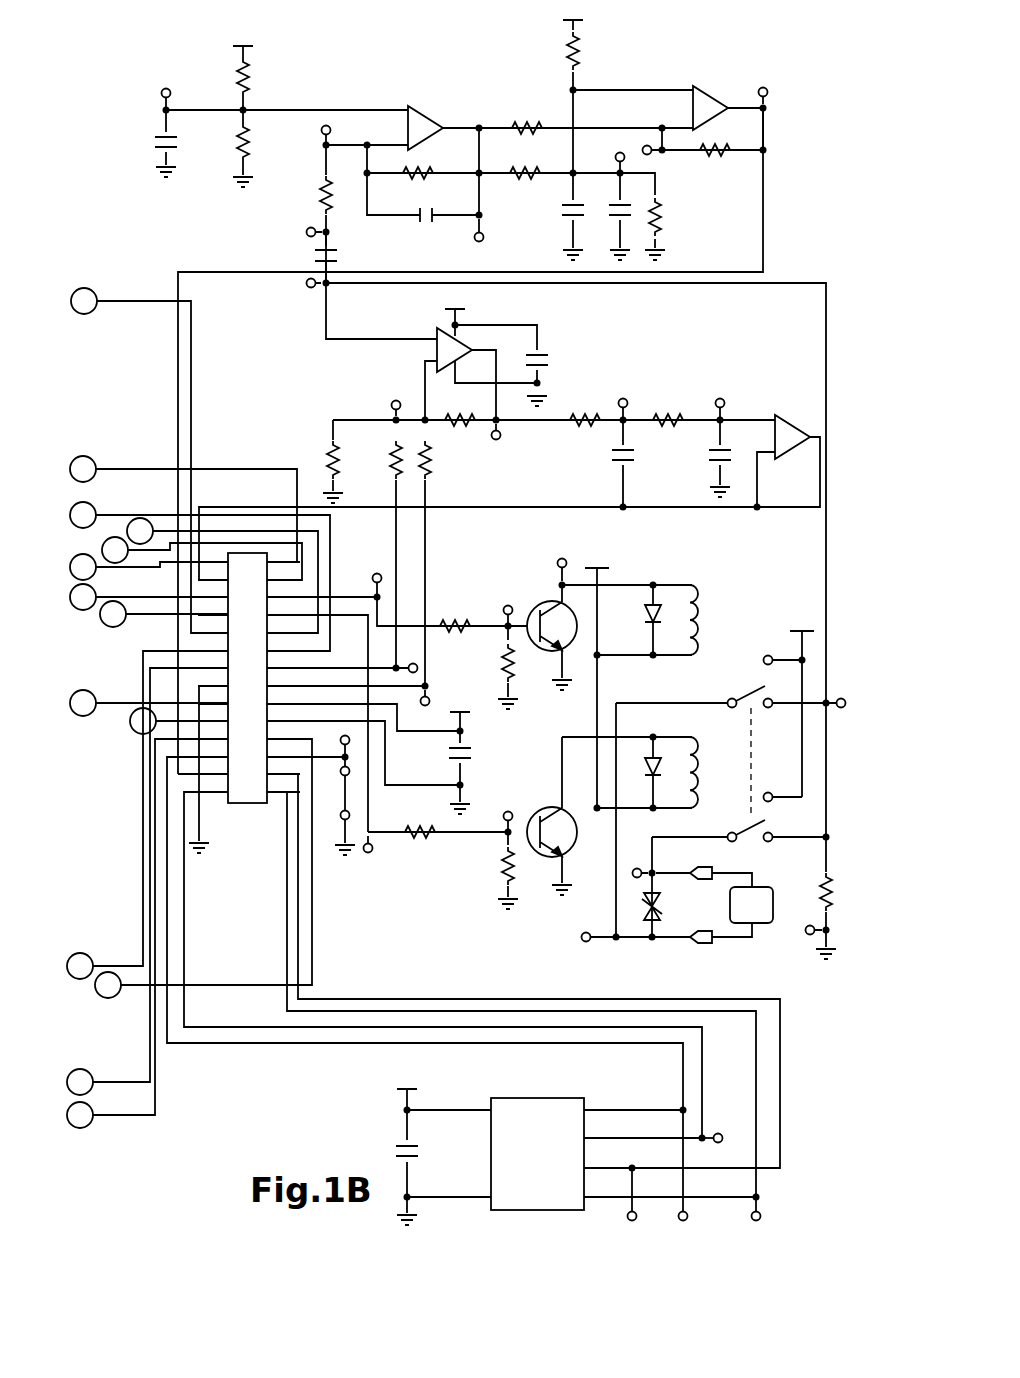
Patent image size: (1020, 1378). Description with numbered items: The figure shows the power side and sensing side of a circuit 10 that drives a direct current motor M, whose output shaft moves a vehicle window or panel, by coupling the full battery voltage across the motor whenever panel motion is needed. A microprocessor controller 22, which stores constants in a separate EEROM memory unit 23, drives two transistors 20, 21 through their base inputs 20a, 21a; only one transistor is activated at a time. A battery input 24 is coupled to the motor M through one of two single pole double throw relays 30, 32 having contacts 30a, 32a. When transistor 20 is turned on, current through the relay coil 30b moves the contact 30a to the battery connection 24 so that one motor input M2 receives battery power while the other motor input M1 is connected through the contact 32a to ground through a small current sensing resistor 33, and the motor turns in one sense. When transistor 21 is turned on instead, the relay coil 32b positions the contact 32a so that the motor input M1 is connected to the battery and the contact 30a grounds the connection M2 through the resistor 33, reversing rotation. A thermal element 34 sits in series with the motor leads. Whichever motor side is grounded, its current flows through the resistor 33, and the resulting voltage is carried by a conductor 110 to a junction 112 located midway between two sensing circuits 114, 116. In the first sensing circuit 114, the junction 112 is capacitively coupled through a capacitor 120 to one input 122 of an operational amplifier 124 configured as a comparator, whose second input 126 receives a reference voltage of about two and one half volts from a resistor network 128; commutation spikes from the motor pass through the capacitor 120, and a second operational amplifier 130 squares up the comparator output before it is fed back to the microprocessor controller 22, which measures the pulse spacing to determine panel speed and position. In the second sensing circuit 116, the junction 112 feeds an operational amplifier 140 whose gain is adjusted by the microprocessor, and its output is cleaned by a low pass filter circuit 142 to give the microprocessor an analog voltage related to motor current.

The circuit 10 is at (146, 392).
The transistor 20 is at (542, 603).
The base input 20a is at (522, 612).
The transistor 21 is at (533, 856).
The base input 21a is at (470, 834).
The microprocessor controller 22 is at (252, 792).
The EEROM memory unit 23 is at (528, 1100).
The battery input 24 is at (797, 633).
The single pole double throw relay 30 is at (718, 580).
The contact 30a is at (748, 692).
The relay coil 30b is at (699, 622).
The single pole double throw relay 32 is at (728, 788).
The contact 32a is at (758, 828).
The relay coil 32b is at (698, 758).
The current sensing resistor 33 is at (832, 908).
The thermal protector 34 is at (663, 906).
The conductor 110 is at (740, 286).
The junction 112 is at (312, 290).
The sensing circuit 114 is at (477, 80).
The sensing circuit 116 is at (640, 336).
The capacitor 120 is at (335, 247).
The input 122 is at (344, 148).
The operational amplifier 124 is at (431, 120).
The second input 126 is at (372, 82).
The resistor network 128 is at (204, 72).
The second operational amplifier 130 is at (732, 98).
The operational amplifier 140 is at (436, 350).
The low pass filter circuit 142 is at (740, 394).
The motor M is at (764, 905).
The motor input M1 is at (705, 868).
The motor input M2 is at (705, 944).